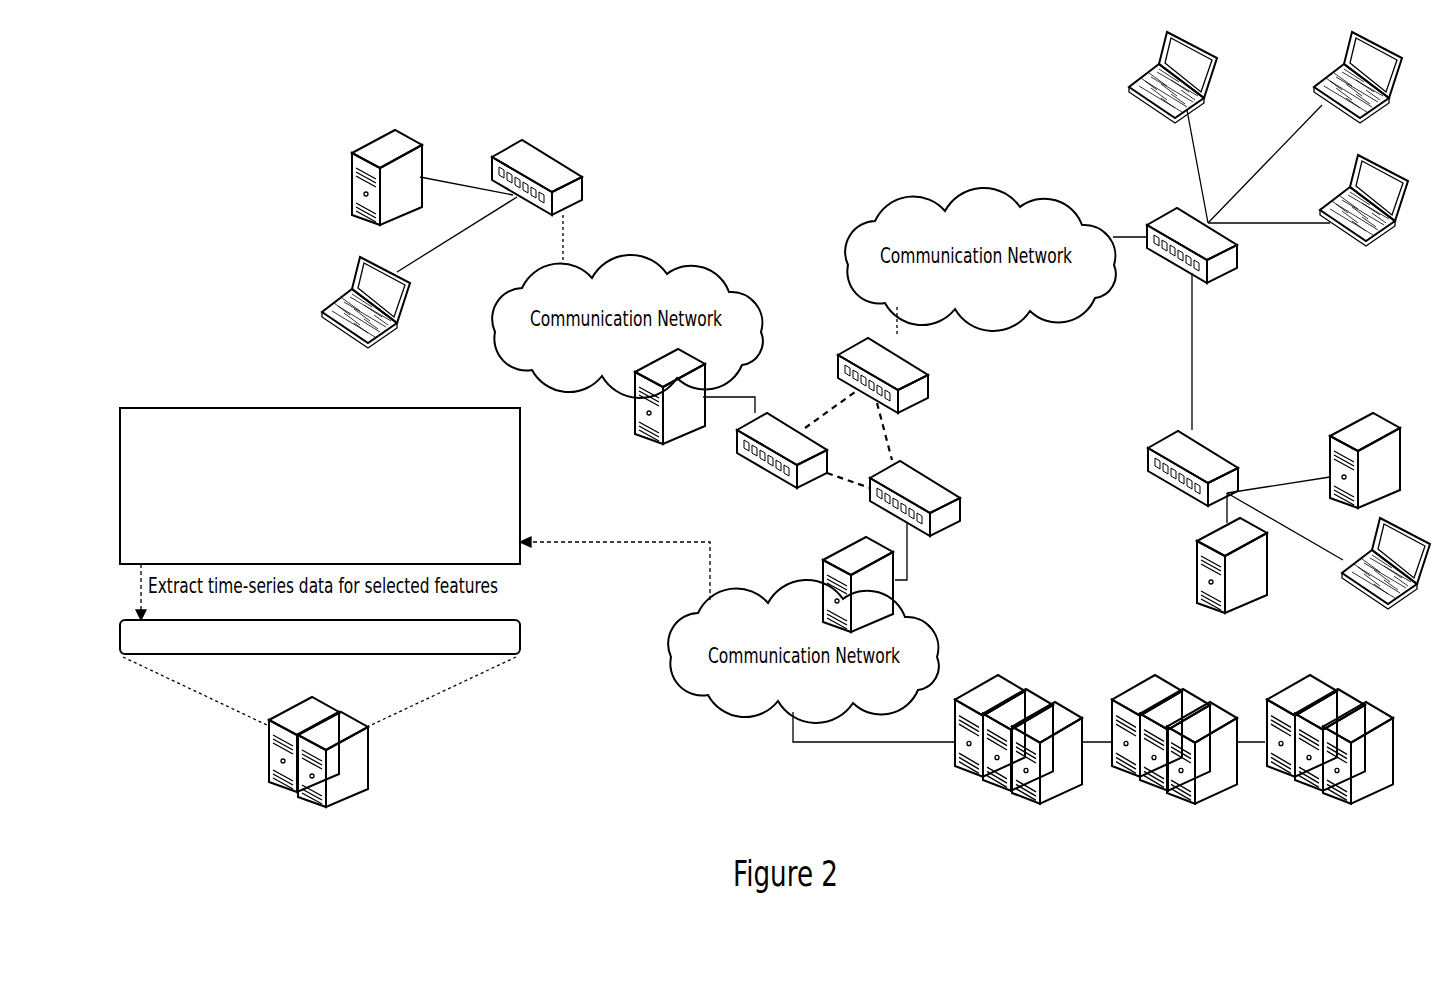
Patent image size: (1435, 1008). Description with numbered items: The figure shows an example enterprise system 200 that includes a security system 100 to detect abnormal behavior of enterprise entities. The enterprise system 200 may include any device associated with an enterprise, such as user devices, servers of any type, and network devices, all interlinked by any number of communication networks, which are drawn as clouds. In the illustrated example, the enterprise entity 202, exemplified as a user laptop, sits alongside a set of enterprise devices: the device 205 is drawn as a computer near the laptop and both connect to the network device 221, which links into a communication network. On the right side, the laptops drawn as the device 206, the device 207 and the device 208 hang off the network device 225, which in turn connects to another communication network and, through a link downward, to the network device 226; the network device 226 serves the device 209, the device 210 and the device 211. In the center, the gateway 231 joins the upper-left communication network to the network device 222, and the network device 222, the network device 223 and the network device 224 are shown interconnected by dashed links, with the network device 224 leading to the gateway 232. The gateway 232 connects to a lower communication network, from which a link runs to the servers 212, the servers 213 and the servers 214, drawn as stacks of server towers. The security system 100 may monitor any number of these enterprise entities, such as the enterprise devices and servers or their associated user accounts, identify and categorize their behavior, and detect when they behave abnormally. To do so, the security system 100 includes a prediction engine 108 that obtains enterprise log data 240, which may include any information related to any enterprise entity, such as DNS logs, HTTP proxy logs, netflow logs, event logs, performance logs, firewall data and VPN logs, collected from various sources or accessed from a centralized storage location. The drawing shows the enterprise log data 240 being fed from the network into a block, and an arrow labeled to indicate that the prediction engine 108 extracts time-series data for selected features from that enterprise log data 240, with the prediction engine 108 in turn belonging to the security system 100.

The enterprise system 200 is at (199, 83).
The enterprise device 205 is at (364, 146).
The network device 221 is at (565, 158).
The enterprise entity 202 is at (352, 337).
The gateway 231 is at (657, 445).
The network device 222 is at (779, 480).
The network device 223 is at (911, 404).
The network device 224 is at (942, 530).
The gateway 232 is at (852, 542).
The network device 225 is at (1215, 278).
The network device 226 is at (1165, 484).
The enterprise device 206 is at (1145, 110).
The enterprise device 207 is at (1322, 102).
The enterprise device 208 is at (1358, 246).
The enterprise device 209 is at (1360, 418).
The enterprise device 210 is at (1375, 588).
The enterprise device 211 is at (1210, 613).
The servers 212 is at (1023, 800).
The servers 213 is at (1178, 798).
The servers 214 is at (1335, 800).
The security system 100 is at (340, 806).
The enterprise log data 240 is at (320, 486).
The prediction engine 108 is at (320, 637).